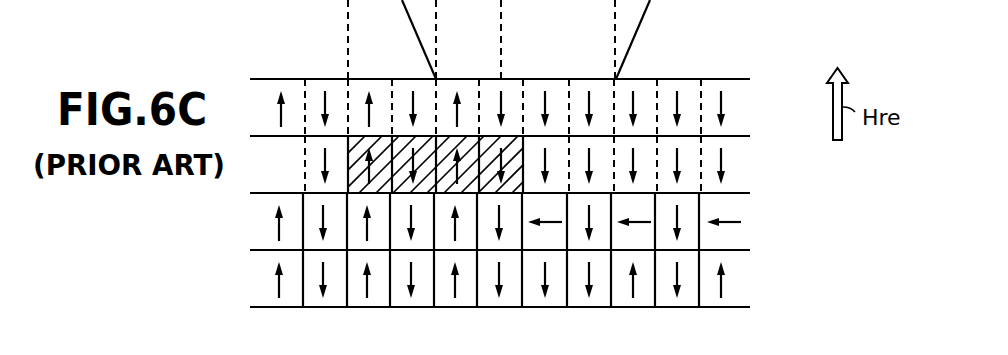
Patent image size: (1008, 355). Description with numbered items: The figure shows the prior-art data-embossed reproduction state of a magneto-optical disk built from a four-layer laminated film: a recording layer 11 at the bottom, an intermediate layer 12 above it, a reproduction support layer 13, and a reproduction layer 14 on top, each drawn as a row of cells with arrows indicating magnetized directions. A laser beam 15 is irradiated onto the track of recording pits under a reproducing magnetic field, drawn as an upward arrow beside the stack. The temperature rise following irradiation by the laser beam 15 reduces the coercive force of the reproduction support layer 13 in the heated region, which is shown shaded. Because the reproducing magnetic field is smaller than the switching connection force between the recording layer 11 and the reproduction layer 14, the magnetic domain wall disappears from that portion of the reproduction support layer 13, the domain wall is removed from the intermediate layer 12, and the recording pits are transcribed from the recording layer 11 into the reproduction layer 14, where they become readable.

The recording layer 11 is at (732, 285).
The intermediate layer 12 is at (732, 233).
The reproduction support layer 13 is at (731, 168).
The reproduction layer 14 is at (731, 110).
The laser beam 15 is at (620, 33).